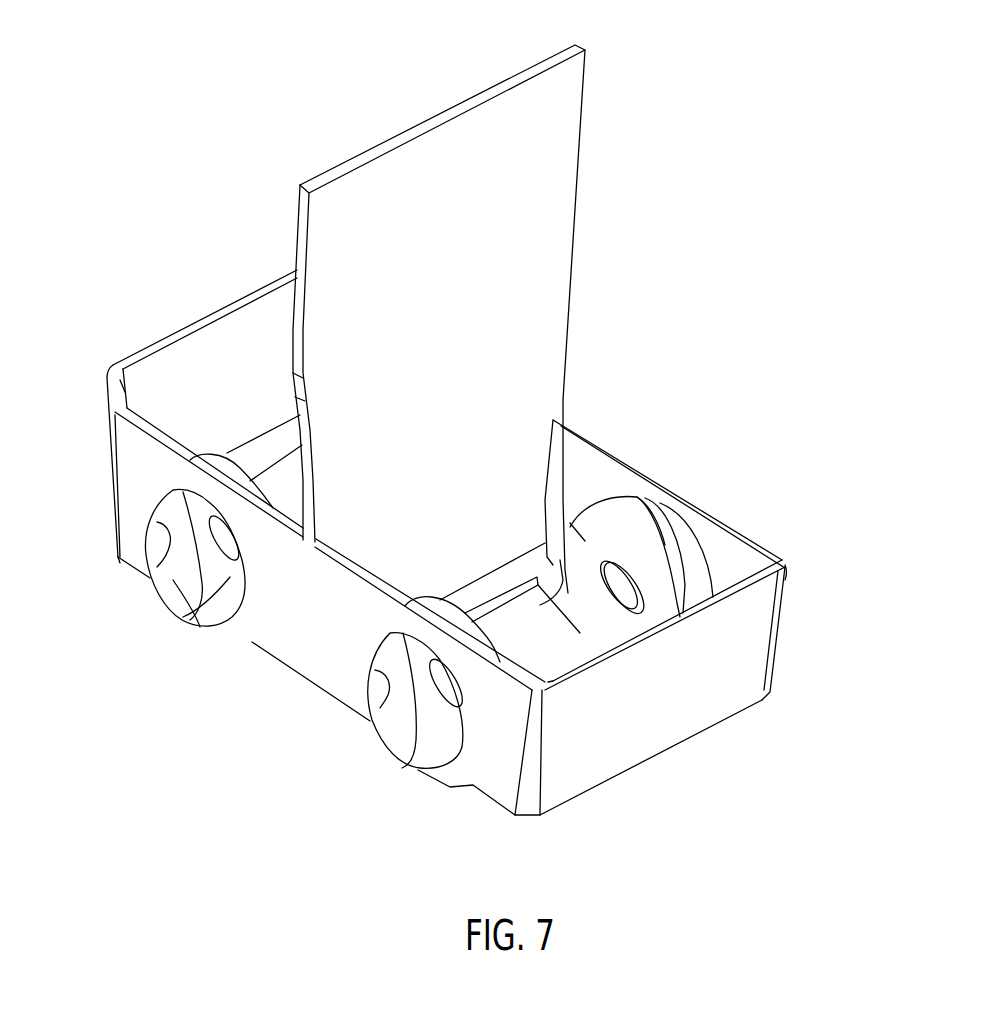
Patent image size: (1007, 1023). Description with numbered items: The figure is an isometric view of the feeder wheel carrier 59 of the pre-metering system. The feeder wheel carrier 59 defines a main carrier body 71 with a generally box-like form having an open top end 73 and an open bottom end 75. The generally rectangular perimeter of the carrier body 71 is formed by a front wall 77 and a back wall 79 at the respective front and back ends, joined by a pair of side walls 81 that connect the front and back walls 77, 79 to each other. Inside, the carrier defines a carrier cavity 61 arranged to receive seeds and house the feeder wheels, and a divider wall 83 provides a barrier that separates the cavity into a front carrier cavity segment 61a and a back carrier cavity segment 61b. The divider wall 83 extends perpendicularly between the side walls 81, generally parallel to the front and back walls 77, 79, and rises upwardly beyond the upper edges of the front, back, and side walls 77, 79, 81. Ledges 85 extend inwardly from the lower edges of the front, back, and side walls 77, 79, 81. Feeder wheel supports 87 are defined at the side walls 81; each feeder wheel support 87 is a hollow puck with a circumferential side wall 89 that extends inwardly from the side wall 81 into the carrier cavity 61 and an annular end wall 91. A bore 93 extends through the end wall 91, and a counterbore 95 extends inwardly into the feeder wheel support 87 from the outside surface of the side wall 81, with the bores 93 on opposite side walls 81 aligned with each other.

The feeder wheel carrier 59 is at (720, 232).
The carrier cavity 61 is at (217, 360).
The front carrier cavity segment 61a is at (558, 662).
The back carrier cavity segment 61b is at (157, 381).
The main carrier body 71 is at (793, 562).
The top end 73 is at (728, 441).
The bottom end 75 is at (675, 778).
The front wall 77 is at (699, 697).
The back wall 79 is at (152, 341).
The side walls 81 is at (318, 630).
The divider wall 83 is at (532, 273).
The ledges 85 is at (270, 443).
The feeder wheel support 87 is at (676, 546).
The circumferential side wall 89 is at (152, 562).
The annular end wall 91 is at (197, 643).
The bore 93 is at (217, 560).
The counterbore 95 is at (183, 570).